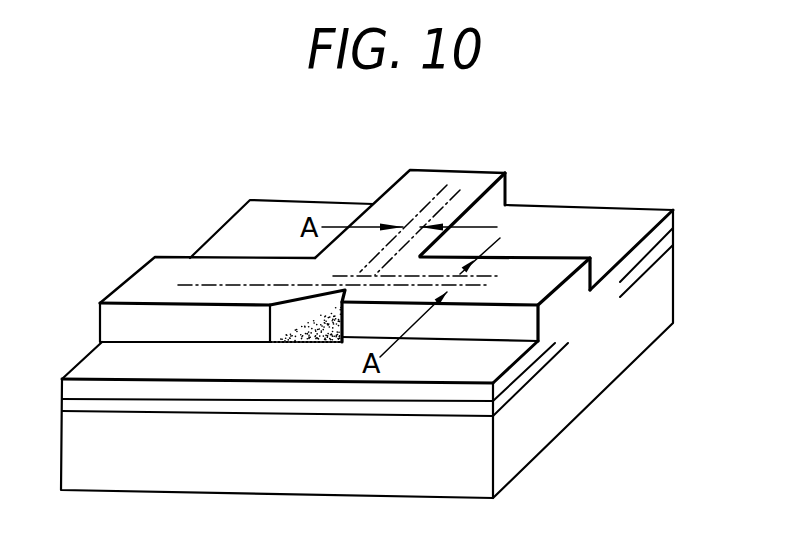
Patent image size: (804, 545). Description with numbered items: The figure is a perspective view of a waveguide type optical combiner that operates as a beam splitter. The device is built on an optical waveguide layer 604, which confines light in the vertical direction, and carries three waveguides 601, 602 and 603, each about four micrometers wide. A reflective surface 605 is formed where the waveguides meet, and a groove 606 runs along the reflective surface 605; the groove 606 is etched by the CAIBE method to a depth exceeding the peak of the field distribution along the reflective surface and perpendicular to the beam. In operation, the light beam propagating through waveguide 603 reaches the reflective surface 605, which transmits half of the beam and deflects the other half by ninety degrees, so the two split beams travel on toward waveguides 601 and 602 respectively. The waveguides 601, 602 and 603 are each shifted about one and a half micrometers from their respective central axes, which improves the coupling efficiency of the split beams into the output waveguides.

The waveguide 601 is at (578, 305).
The waveguide 602 is at (505, 172).
The waveguide 603 is at (100, 302).
The optical waveguide layer 604 is at (675, 242).
The reflective surface 605 is at (313, 317).
The groove 606 is at (310, 343).